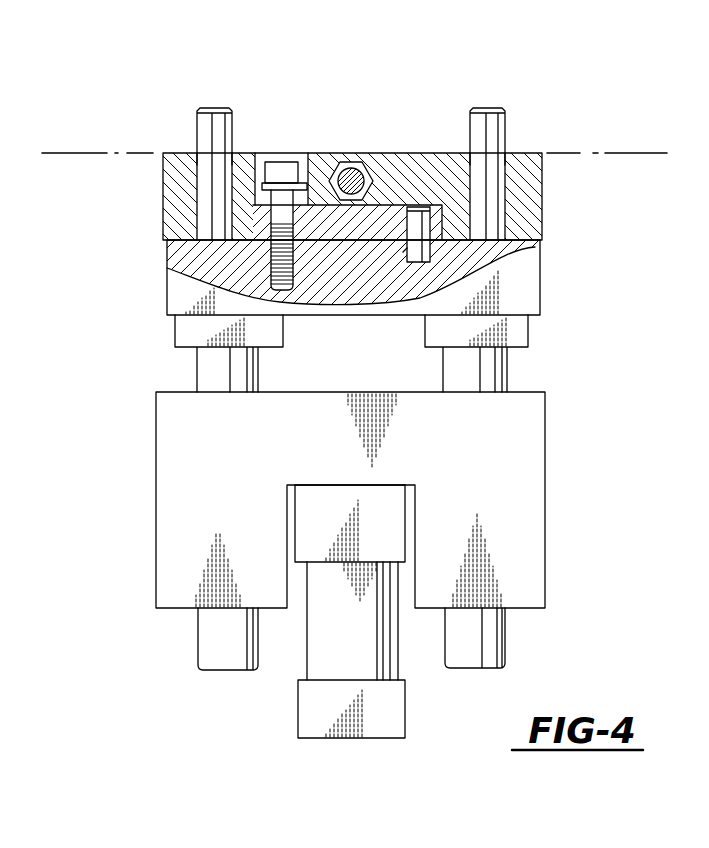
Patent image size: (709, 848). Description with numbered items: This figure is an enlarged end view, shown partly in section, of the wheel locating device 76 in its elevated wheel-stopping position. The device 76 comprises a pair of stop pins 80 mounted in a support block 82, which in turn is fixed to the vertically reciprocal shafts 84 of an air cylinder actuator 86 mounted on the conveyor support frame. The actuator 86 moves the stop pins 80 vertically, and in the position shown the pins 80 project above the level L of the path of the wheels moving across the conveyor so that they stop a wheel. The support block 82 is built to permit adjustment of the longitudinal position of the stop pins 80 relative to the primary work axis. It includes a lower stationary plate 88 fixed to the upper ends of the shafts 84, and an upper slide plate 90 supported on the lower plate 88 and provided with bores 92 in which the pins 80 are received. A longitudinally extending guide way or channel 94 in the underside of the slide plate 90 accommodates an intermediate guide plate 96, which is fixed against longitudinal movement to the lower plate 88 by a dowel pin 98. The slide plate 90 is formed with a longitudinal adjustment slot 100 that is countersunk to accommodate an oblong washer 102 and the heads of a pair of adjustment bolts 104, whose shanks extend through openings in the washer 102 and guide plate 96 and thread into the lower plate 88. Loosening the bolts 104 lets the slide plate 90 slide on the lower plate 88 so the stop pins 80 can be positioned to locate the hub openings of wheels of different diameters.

The level L is at (62, 153).
The wheel locating device 76 is at (140, 432).
The stop pins 80 is at (197, 124).
The support block 82 is at (552, 248).
The vertically reciprocal shafts 84 is at (196, 373).
The air cylinder actuator 86 is at (298, 708).
The lower stationary plate 88 is at (523, 300).
The upper slide plate 90 is at (537, 197).
The bores 92 is at (200, 158).
The guide way or channel 94 is at (417, 203).
The intermediate guide plate 96 is at (377, 203).
The dowel pin 98 is at (403, 252).
The longitudinal adjustment slot 100 is at (300, 163).
The oblong washer 102 is at (285, 187).
The adjustment bolts 104 is at (272, 165).